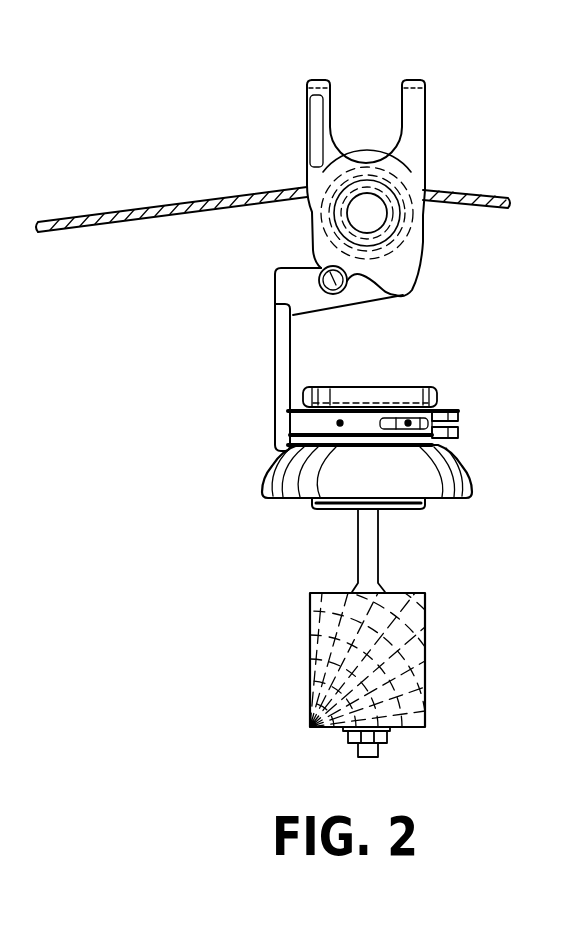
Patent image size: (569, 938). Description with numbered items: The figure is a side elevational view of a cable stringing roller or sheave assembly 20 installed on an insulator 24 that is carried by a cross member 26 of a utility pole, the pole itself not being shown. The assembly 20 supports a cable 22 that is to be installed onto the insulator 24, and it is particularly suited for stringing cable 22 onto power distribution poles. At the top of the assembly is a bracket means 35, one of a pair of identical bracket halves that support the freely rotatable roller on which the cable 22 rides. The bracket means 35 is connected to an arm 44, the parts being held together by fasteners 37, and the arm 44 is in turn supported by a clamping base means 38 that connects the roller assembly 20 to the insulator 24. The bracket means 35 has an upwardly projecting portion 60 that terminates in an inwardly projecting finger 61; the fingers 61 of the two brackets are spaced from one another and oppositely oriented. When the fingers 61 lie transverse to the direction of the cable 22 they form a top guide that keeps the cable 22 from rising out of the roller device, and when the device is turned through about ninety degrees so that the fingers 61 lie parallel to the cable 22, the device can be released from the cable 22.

The cable stringing roller or sheave assembly 20 is at (437, 233).
The cable 22 is at (167, 205).
The insulator 24 is at (267, 465).
The cross member 26 is at (400, 672).
The bracket means 35 is at (400, 272).
The fasteners 37 is at (320, 268).
The clamping base means 38 is at (355, 423).
The arm 44 is at (275, 348).
The upwardly projecting portions 60 is at (307, 135).
The inwardly projecting fingers 61 is at (316, 77).